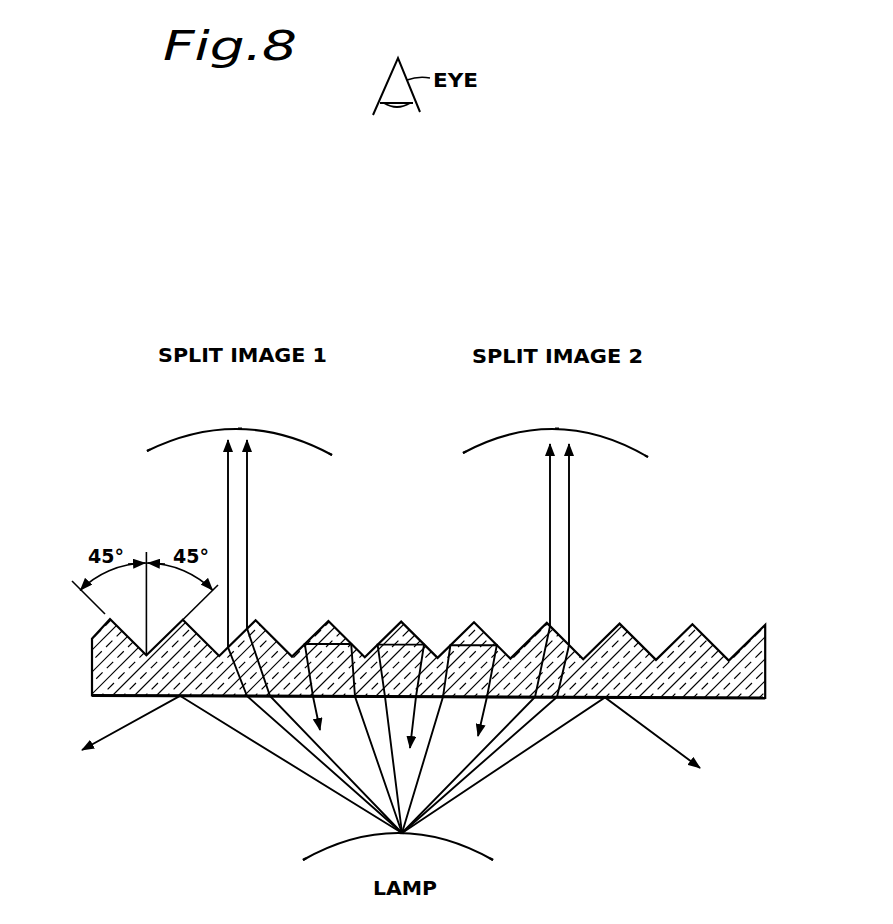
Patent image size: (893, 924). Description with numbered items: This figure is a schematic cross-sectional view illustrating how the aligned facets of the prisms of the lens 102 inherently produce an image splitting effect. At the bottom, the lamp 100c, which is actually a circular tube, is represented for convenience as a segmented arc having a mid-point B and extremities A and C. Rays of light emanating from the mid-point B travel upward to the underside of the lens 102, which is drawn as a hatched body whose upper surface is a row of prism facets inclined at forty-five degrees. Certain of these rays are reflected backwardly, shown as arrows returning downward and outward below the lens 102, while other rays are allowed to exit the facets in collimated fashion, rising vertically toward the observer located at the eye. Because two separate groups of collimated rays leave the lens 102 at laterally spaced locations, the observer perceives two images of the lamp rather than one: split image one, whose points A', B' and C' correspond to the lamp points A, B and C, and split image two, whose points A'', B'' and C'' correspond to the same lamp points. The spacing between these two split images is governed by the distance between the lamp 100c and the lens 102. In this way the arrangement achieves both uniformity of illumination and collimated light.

The lens 102 is at (92, 657).
The lamp 100c is at (470, 850).
The extremity of lamp arc A is at (311, 871).
The mid-point of lamp arc B is at (403, 845).
The extremity of lamp arc C is at (485, 870).
The split image 1 point A' is at (146, 438).
The split image 1 point B' is at (242, 414).
The split image 1 point C' is at (335, 441).
The split image 2 point A'' is at (465, 440).
The split image 2 point B'' is at (561, 415).
The split image 2 point C'' is at (652, 444).